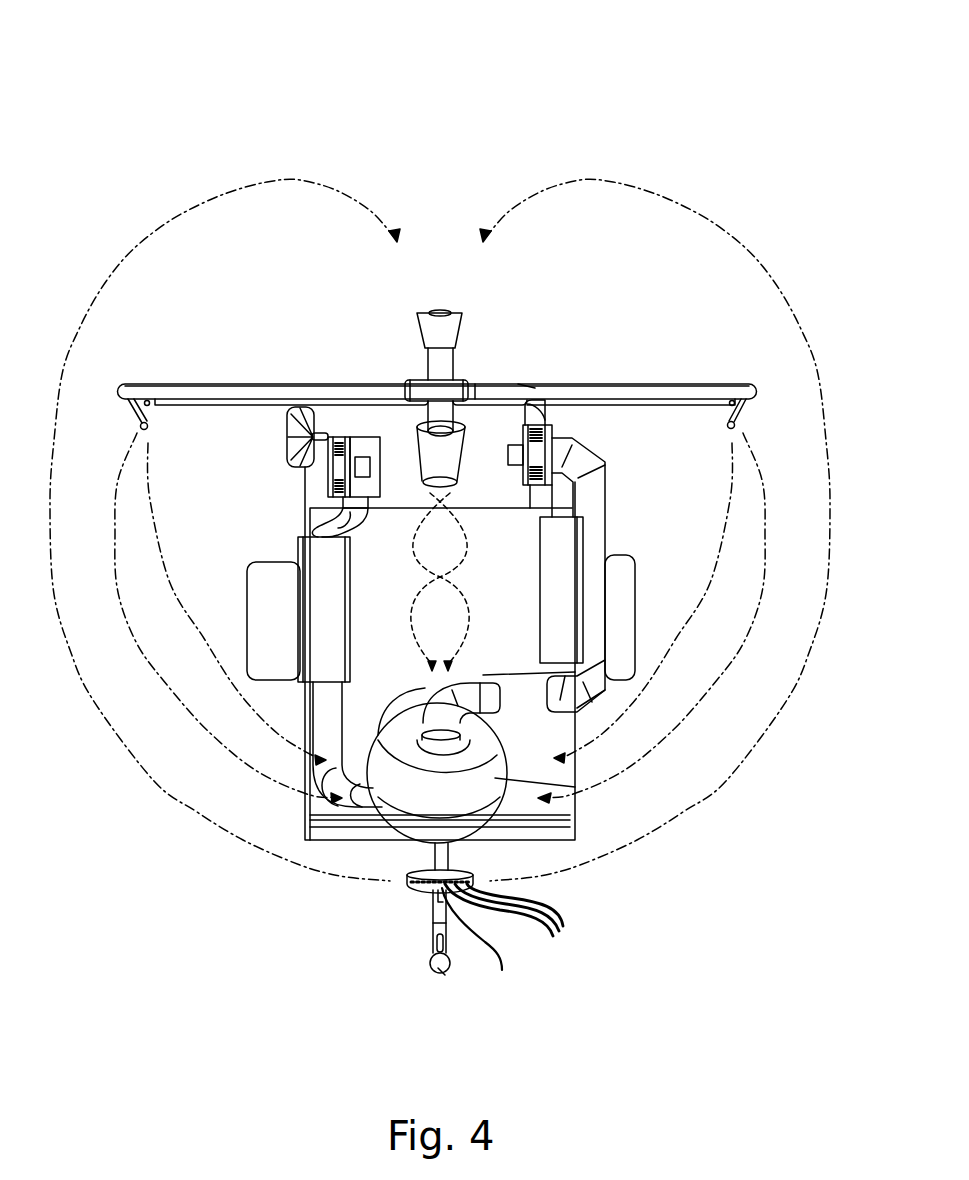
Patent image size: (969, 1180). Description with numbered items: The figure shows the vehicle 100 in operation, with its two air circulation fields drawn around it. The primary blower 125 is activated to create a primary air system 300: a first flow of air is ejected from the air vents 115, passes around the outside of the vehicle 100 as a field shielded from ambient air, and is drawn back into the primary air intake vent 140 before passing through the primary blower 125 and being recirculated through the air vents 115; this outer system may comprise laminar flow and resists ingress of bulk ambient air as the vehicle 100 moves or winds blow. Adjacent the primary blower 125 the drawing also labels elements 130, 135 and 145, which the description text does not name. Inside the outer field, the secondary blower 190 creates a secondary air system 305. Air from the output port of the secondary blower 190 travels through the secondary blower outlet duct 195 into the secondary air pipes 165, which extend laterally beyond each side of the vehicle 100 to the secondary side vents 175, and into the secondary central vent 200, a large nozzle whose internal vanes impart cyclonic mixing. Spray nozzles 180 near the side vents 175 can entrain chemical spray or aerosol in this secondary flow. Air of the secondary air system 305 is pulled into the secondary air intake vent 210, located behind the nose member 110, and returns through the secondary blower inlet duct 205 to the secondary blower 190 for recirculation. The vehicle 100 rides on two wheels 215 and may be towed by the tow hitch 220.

The vehicle 100 is at (153, 145).
The nose member 110 is at (493, 944).
The air vents 115 is at (504, 913).
The primary blower 125 is at (336, 472).
The left air duct 130 is at (330, 722).
The left inlet housing 135 is at (330, 417).
The primary air intake vent 140 is at (447, 310).
The inlet tube 145 is at (456, 330).
The secondary air pipes 165 is at (215, 392).
The secondary side vents 175 is at (133, 399).
The spray nozzles 180 is at (148, 426).
The secondary blower 190 is at (552, 430).
The secondary blower outlet duct 195 is at (540, 413).
The secondary central vent 200 is at (432, 457).
The secondary blower inlet duct 205 is at (597, 530).
The secondary air intake vent 210 is at (443, 755).
The wheels 215 is at (257, 598).
The tow hitch 220 is at (437, 966).
The primary air system 300 is at (78, 327).
The secondary air system 305 is at (443, 575).